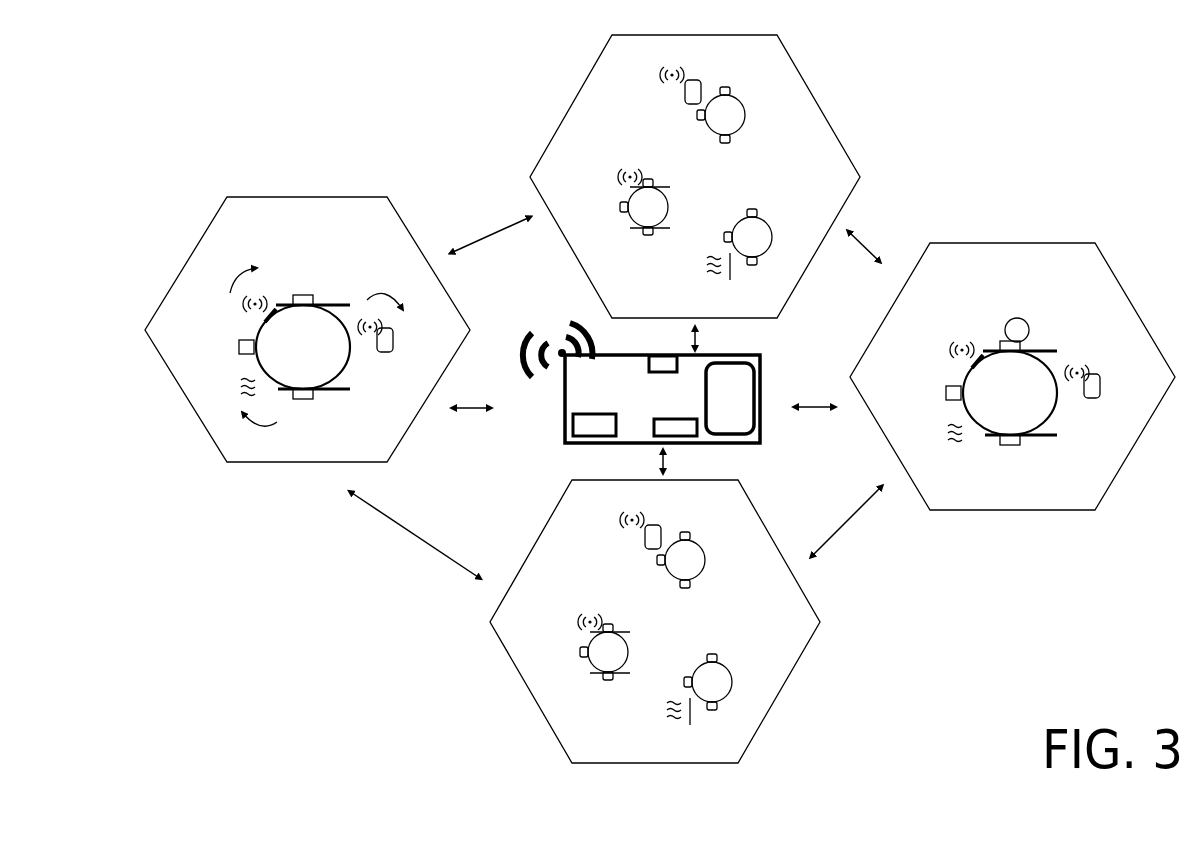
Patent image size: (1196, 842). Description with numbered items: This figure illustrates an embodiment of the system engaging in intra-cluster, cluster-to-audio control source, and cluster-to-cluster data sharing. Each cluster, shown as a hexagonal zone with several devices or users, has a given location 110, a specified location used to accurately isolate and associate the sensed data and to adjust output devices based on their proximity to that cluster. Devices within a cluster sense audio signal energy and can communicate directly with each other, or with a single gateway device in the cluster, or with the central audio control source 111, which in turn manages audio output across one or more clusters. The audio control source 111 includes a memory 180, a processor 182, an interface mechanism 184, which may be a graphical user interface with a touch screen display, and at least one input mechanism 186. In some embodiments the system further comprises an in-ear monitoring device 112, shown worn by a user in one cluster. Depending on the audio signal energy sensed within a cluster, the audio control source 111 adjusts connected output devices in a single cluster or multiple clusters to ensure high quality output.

The given location 110 is at (227, 197).
The audio control source 111 is at (565, 428).
The in-ear monitoring device 112 is at (1010, 320).
The memory 180 is at (608, 428).
The processor 182 is at (673, 430).
The interface mechanism 184 is at (740, 407).
The input mechanism 186 is at (672, 358).